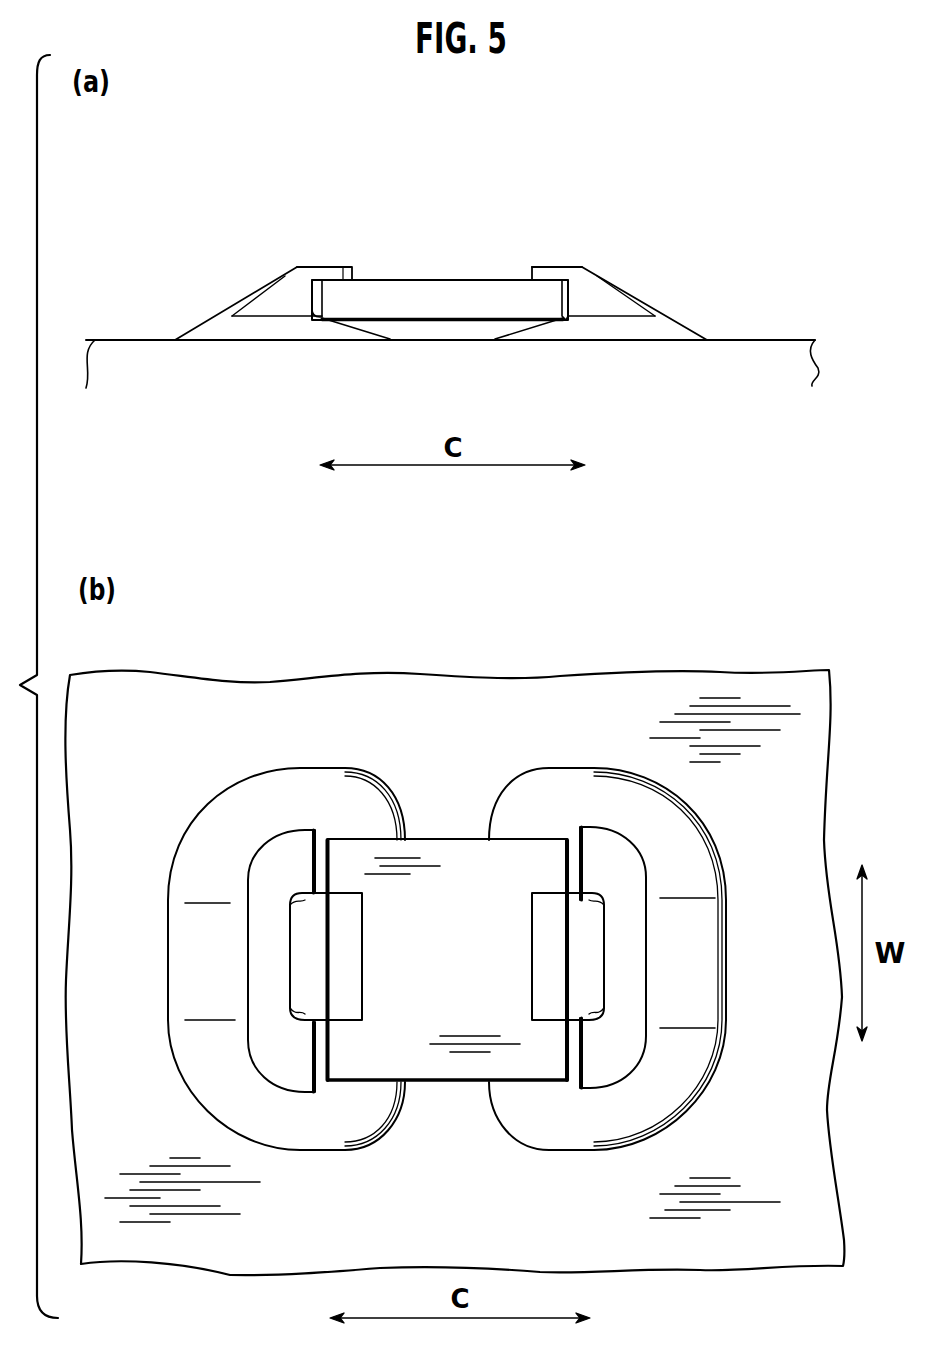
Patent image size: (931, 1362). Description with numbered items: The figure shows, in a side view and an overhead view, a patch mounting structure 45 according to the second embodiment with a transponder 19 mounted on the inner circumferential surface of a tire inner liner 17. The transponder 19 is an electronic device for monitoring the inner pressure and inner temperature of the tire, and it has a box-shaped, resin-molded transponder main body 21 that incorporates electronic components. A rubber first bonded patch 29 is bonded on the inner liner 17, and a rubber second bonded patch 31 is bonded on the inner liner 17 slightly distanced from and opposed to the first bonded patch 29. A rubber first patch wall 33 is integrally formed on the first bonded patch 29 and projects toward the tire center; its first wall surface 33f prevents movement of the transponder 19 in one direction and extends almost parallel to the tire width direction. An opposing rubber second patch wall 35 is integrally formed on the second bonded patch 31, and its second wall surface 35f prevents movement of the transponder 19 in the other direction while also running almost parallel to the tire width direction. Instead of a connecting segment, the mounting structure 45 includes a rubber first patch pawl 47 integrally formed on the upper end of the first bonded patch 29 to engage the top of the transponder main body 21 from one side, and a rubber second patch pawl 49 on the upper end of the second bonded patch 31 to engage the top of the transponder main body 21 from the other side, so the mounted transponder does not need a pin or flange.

The inner liner 17 is at (126, 340).
The transponder 19 is at (455, 321).
The transponder main body 21 is at (358, 305).
The first bonded patch 29 is at (210, 327).
The second bonded patch 31 is at (686, 327).
The first patch wall 33 is at (280, 278).
The first wall surface 33f is at (328, 292).
The second patch wall 35 is at (608, 280).
The second wall surface 35f is at (565, 300).
The mounting structure 45 is at (602, 191).
The first patch pawl 47 is at (345, 267).
The second patch pawl 49 is at (535, 267).